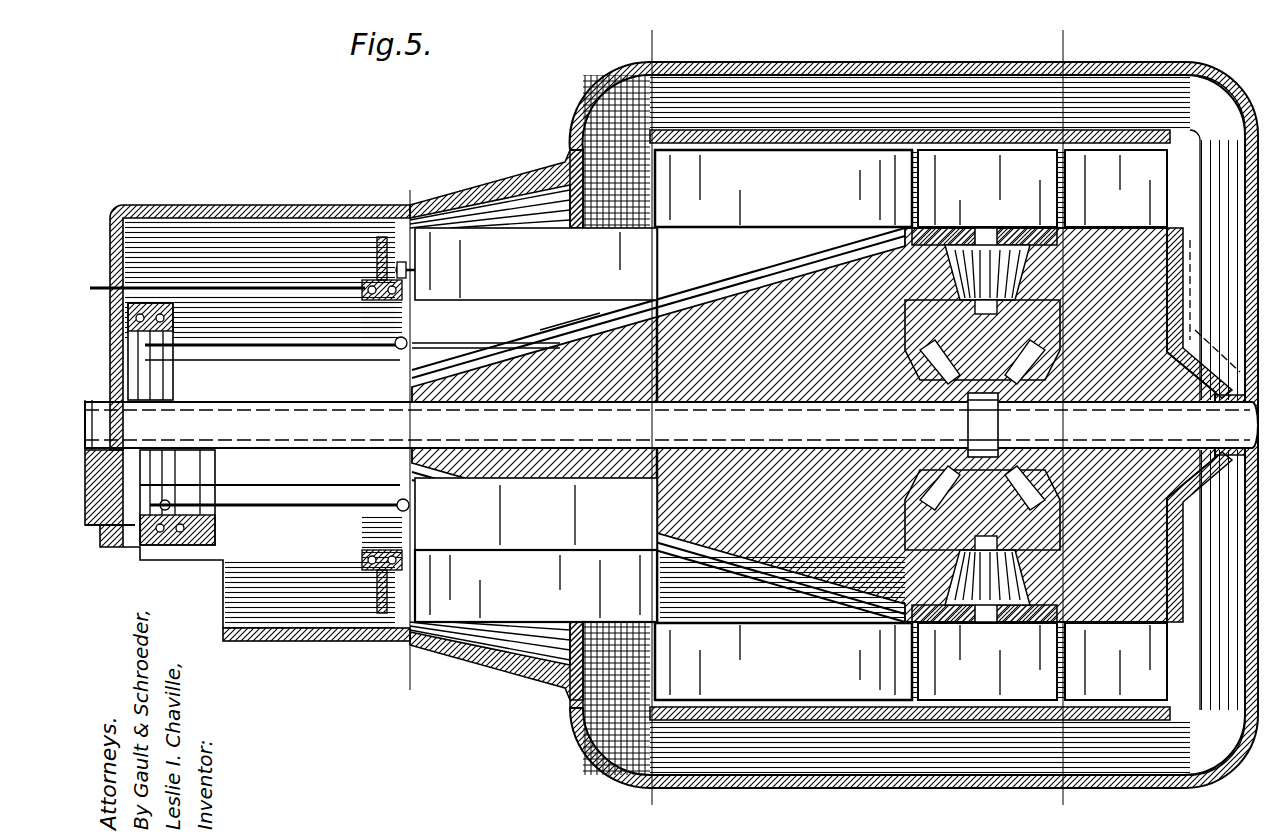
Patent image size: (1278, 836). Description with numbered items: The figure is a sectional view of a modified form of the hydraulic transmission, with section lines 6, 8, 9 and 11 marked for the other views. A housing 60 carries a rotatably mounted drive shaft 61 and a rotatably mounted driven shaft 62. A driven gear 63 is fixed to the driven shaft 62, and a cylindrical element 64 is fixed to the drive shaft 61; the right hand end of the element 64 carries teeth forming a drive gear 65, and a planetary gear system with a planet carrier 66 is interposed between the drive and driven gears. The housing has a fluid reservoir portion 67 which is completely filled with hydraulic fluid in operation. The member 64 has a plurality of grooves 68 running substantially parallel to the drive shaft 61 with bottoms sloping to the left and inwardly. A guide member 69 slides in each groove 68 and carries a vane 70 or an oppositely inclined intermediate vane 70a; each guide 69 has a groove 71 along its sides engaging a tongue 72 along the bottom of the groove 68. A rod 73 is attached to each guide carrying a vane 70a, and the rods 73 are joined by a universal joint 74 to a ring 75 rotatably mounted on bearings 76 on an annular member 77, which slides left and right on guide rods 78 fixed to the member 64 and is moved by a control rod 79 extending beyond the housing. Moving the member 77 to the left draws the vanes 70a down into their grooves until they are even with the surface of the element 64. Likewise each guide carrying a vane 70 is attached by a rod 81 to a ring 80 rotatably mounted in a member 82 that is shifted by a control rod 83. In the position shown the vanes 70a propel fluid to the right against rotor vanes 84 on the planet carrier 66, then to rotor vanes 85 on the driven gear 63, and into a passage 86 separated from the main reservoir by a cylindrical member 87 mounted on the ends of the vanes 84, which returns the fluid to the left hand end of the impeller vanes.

The housing 60 is at (1160, 290).
The drive shaft 61 is at (285, 402).
The driven shaft 62 is at (1205, 395).
The driven gear 63 is at (1115, 277).
The cylindrical element 64 is at (735, 360).
The drive gear 65 is at (935, 245).
The planet carrier 66 is at (1015, 325).
The fluid reservoir portion 67 is at (1235, 105).
The grooves 68 is at (560, 342).
The guide member 69 is at (690, 248).
The vane 70 is at (476, 546).
The intermediate vane 70a is at (793, 165).
The groove 71 is at (668, 300).
The tongue 72 is at (585, 316).
The rod 73 is at (560, 268).
The universal joint 74 is at (396, 230).
The ring 75 is at (378, 250).
The bearings 76 is at (408, 292).
The annular member 77 is at (408, 333).
The guide rods 78 is at (275, 215).
The control rod 79 is at (185, 265).
The ring 80 is at (172, 512).
The rod 81 is at (262, 350).
The member 82 is at (170, 382).
The control rod 83 is at (112, 522).
The rotor vanes 84 is at (995, 160).
The rotor vanes 85 is at (1200, 95).
The passage 86 is at (1110, 70).
The cylindrical member 87 is at (952, 150).
The section line 6— 6 is at (855, 42).
The section line 8— 8 is at (470, 183).
The section line 9— 9 is at (598, 42).
The section line 11— 11 is at (1005, 42).